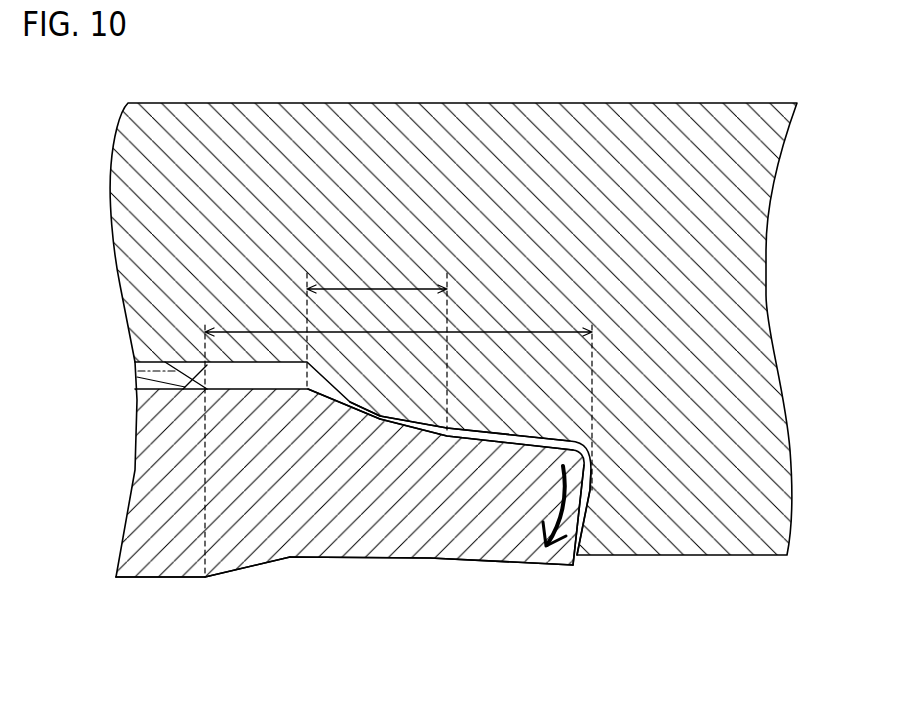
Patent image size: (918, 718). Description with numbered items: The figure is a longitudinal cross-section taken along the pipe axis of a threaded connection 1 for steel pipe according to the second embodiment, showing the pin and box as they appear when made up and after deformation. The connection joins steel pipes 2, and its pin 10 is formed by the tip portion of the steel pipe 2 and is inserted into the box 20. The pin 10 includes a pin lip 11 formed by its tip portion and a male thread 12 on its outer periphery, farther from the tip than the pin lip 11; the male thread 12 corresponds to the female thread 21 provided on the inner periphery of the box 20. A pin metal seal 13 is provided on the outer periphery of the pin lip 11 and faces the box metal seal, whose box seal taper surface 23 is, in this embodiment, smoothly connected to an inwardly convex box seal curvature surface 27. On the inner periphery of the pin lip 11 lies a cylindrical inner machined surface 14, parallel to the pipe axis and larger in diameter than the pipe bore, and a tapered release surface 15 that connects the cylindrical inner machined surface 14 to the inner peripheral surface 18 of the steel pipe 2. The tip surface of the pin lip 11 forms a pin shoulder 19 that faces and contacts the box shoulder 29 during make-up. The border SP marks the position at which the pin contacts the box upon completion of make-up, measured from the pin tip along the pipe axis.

The threaded connection 1 is at (413, 629).
The steel pipe 2 is at (620, 103).
The pin 10 is at (263, 502).
The pin lip 11 is at (518, 327).
The male thread 12 is at (167, 368).
The pin metal seal 13 is at (381, 286).
The cylindrical inner machined surface 14 is at (485, 564).
The release surface 15 is at (249, 574).
The inner peripheral surface 18 is at (163, 580).
The pin shoulder 19 is at (584, 505).
The box 20 is at (556, 254).
The female thread 21 is at (168, 387).
The box seal taper surface 23 is at (383, 419).
The box seal curvature surface 27 is at (351, 409).
The box shoulder 29 is at (563, 499).
The border SP is at (362, 412).